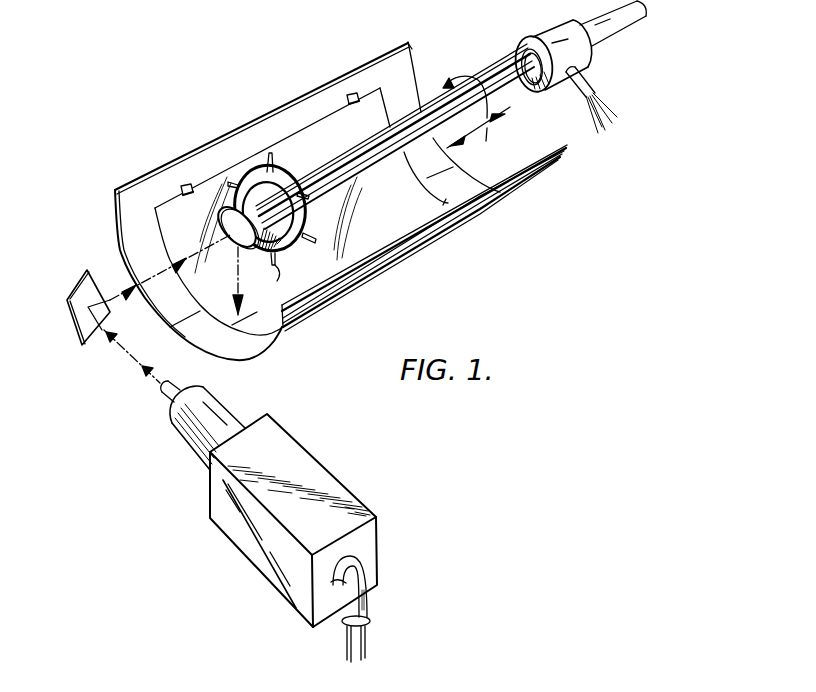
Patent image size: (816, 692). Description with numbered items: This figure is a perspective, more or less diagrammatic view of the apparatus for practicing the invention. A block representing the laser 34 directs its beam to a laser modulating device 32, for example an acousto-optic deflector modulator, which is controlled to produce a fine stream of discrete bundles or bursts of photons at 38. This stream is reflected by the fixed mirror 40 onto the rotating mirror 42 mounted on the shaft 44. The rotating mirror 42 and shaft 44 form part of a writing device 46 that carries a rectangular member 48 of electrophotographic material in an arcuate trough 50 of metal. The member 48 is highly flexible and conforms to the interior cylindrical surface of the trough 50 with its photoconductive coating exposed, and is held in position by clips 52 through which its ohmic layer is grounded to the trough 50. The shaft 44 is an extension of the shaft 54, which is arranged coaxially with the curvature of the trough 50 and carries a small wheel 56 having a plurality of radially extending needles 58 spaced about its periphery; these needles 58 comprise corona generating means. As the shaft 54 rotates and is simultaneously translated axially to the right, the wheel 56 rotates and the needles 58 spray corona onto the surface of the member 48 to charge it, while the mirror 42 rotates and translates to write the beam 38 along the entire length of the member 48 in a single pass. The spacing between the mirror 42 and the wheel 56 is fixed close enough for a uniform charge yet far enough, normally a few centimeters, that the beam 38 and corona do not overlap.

The laser modulating device 32 is at (250, 521).
The laser 34 is at (203, 425).
The beam of discrete bundles of photons 38 is at (126, 352).
The fixed mirror 40 is at (67, 304).
The rotating mirror 42 is at (218, 218).
The shaft 44 is at (253, 203).
The writing device 46 is at (295, 84).
The rectangular member 48 is at (334, 135).
The arcuate trough 50 is at (137, 203).
The clips 52 is at (183, 188).
The shaft 54 is at (419, 124).
The wheel 56 is at (280, 215).
The needles 58 is at (272, 160).